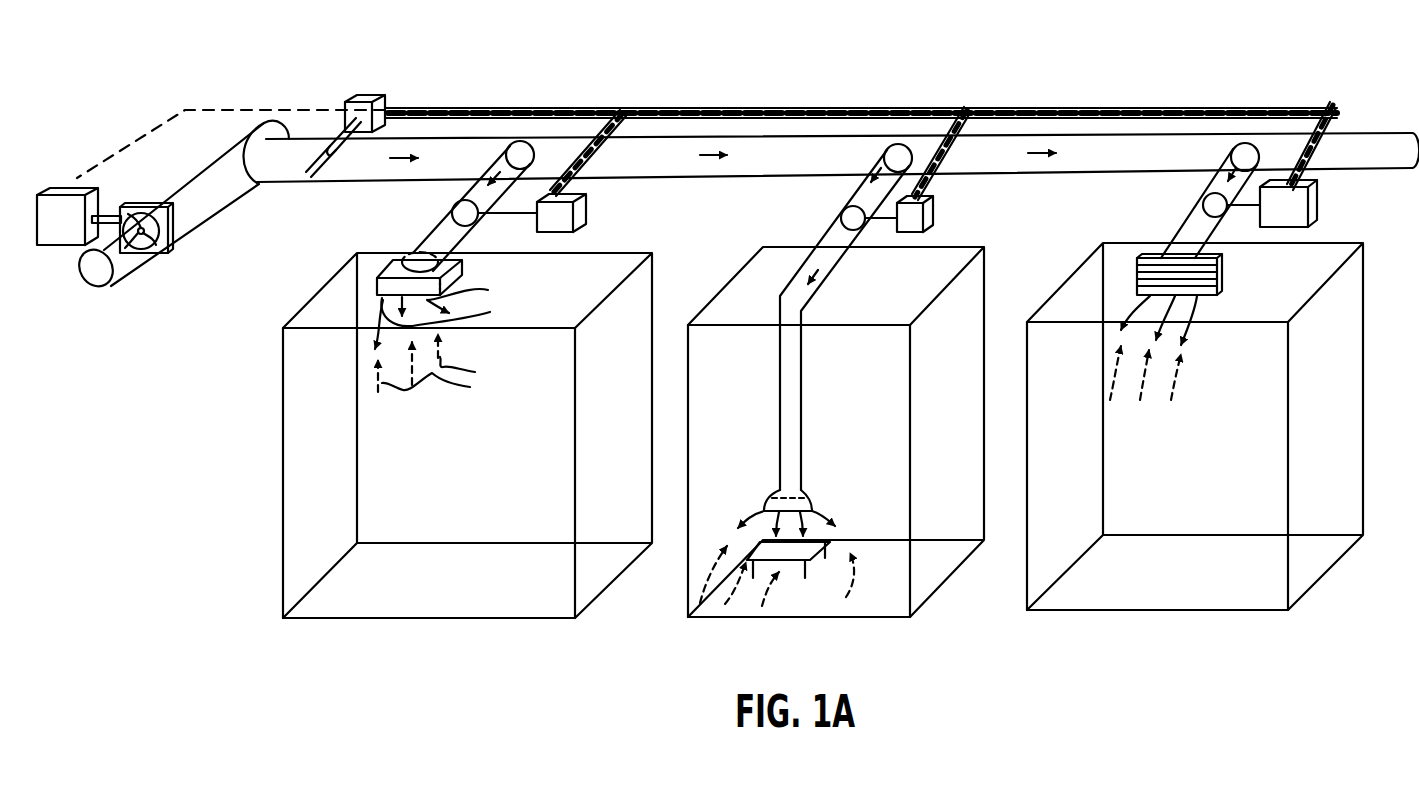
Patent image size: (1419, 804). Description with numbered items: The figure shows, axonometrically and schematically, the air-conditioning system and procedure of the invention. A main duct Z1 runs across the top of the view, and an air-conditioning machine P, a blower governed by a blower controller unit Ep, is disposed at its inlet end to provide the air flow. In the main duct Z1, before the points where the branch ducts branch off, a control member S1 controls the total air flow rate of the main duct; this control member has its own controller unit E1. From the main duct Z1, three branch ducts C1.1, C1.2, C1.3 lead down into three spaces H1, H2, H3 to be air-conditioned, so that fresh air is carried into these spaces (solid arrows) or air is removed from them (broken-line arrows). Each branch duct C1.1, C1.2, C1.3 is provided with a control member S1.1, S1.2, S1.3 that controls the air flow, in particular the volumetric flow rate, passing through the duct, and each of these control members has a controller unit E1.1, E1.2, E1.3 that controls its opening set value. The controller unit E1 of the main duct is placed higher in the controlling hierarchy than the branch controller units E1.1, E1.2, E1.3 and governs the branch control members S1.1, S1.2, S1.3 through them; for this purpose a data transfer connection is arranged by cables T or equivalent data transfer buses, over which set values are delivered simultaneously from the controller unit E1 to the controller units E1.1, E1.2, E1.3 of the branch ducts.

The main duct Z1 is at (643, 154).
The air-conditioning machine P is at (166, 262).
The blower controller unit Ep is at (58, 207).
The controller unit of the main duct E1 is at (368, 98).
The control member of the main duct S1 is at (310, 180).
The cables T is at (598, 158).
The branch duct C1.1 is at (415, 233).
The control member of the branch duct S1.1 is at (446, 196).
The control unit of the branch duct E1.1 is at (587, 200).
The space to be air-conditioned H1 is at (467, 435).
The incoming air duct C1.2 is at (816, 236).
The control member of the branch duct S1.2 is at (841, 203).
The control unit of the branch duct E1.2 is at (932, 207).
The space to be air-conditioned H2 is at (836, 432).
The branch duct C1.3 is at (1193, 224).
The control member of the branch duct S1.3 is at (1194, 188).
The controller unit of the branch duct E1.3 is at (1318, 192).
The space to be air-conditioned H3 is at (1195, 426).